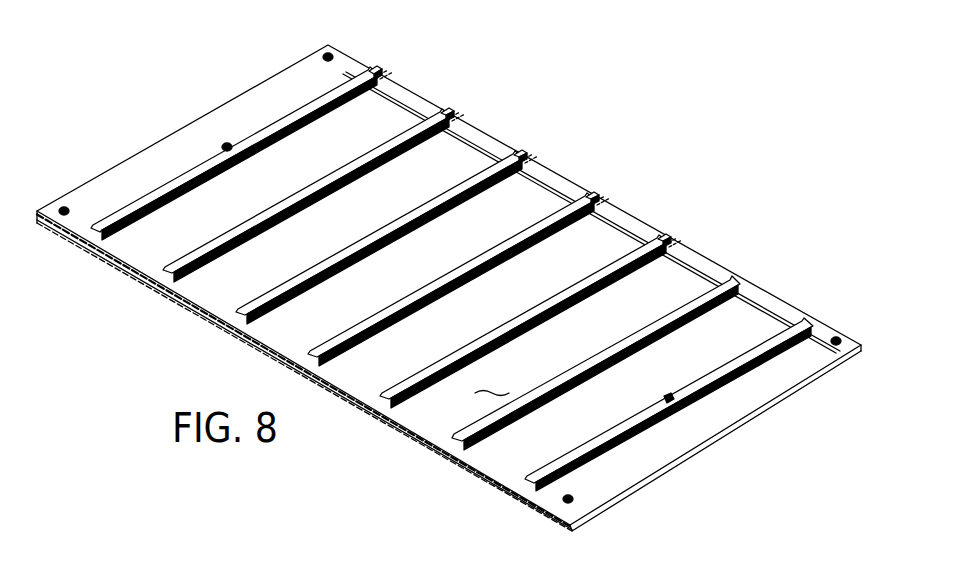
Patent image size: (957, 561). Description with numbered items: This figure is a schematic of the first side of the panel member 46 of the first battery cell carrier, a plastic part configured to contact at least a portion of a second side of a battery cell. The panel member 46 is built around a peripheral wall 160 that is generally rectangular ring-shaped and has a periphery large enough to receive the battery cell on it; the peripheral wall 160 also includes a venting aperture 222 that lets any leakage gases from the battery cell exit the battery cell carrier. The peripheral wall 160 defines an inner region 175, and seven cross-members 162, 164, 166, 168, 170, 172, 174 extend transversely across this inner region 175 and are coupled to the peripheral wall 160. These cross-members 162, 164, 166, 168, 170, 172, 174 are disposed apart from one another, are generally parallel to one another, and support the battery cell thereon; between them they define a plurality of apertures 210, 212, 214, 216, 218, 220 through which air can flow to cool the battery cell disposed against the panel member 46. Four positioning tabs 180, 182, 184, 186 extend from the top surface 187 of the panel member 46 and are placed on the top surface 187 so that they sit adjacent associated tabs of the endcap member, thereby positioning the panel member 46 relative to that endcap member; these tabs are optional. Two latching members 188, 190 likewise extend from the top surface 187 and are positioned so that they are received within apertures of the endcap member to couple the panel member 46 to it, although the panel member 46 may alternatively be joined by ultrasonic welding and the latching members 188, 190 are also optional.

The panel member 46 is at (622, 110).
The peripheral wall 160 is at (796, 307).
The cross-member 162 is at (230, 161).
The cross-member 164 is at (304, 200).
The cross-member 166 is at (378, 241).
The cross-member 168 is at (448, 282).
The cross-member 170 is at (518, 325).
The cross-member 172 is at (582, 378).
The cross-member 174 is at (727, 382).
The inner region 175 is at (492, 381).
The positioning tab 180 is at (63, 205).
The positioning tab 182 is at (328, 50).
The positioning tab 184 is at (568, 494).
The positioning tab 186 is at (836, 336).
The top surface 187 is at (550, 494).
The latching member 188 is at (226, 143).
The latching member 190 is at (668, 394).
The aperture 210 is at (387, 103).
The aperture 212 is at (458, 136).
The aperture 214 is at (545, 170).
The aperture 216 is at (612, 211).
The aperture 218 is at (683, 248).
The aperture 220 is at (750, 302).
The venting aperture 222 is at (132, 282).